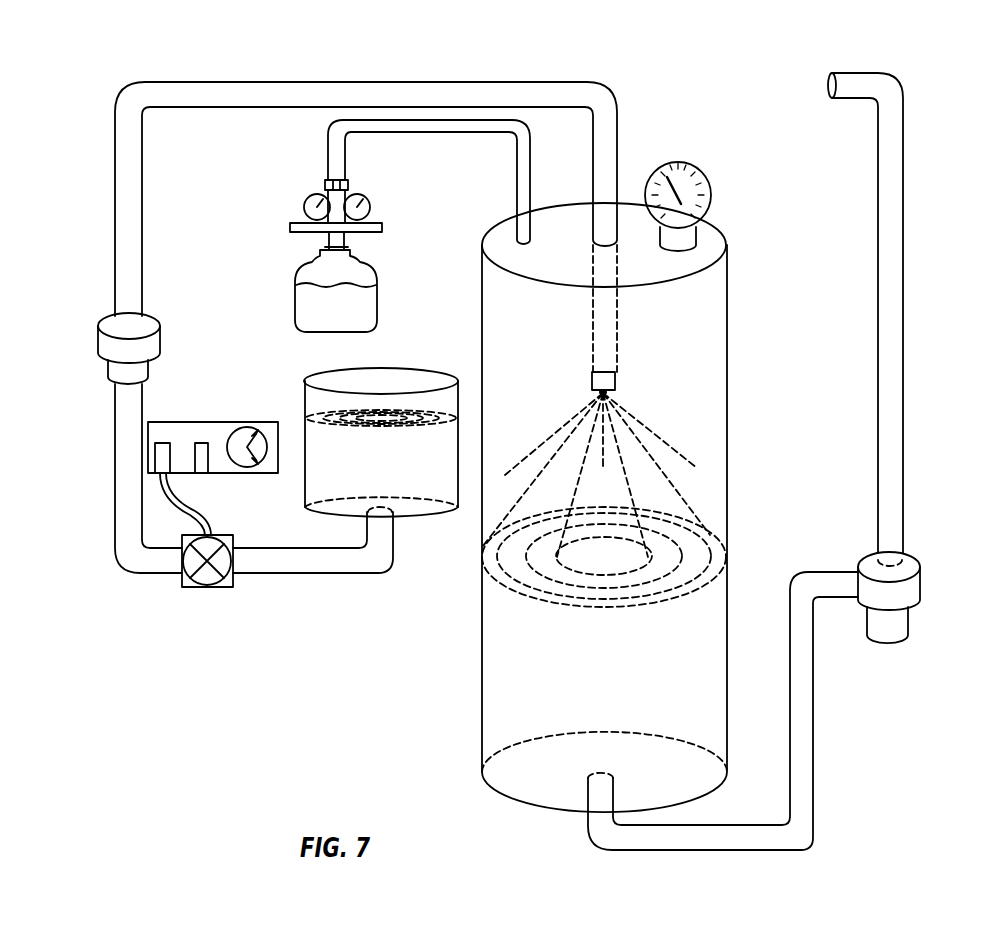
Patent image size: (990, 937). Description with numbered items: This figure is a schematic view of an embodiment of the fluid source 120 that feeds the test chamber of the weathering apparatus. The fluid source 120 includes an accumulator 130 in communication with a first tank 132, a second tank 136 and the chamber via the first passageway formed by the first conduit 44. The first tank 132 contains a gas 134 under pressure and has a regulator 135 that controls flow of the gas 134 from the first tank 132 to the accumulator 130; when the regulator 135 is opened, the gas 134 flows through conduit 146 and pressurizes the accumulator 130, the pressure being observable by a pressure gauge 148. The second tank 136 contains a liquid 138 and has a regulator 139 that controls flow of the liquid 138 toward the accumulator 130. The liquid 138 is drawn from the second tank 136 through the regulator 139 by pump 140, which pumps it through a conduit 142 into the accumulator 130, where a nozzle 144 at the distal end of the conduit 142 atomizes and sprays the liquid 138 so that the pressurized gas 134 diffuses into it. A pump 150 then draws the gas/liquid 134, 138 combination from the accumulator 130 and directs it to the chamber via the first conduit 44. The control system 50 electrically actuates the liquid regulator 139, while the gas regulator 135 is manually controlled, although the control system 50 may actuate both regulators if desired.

The fluid source 120 is at (705, 60).
The first conduit 44 is at (895, 153).
The accumulator 130 is at (727, 336).
The first tank 132 is at (377, 262).
The gas 134 is at (300, 318).
The regulator 135 is at (343, 180).
The second tank 136 is at (310, 403).
The liquid 138 is at (310, 478).
The regulator 139 is at (208, 588).
The pump 140 is at (102, 350).
The conduit 142 is at (317, 81).
The nozzle 144 is at (605, 380).
The conduit 146 is at (422, 128).
The pressure gauge 148 is at (700, 170).
The pump 150 is at (912, 592).
The control system 50 is at (205, 422).